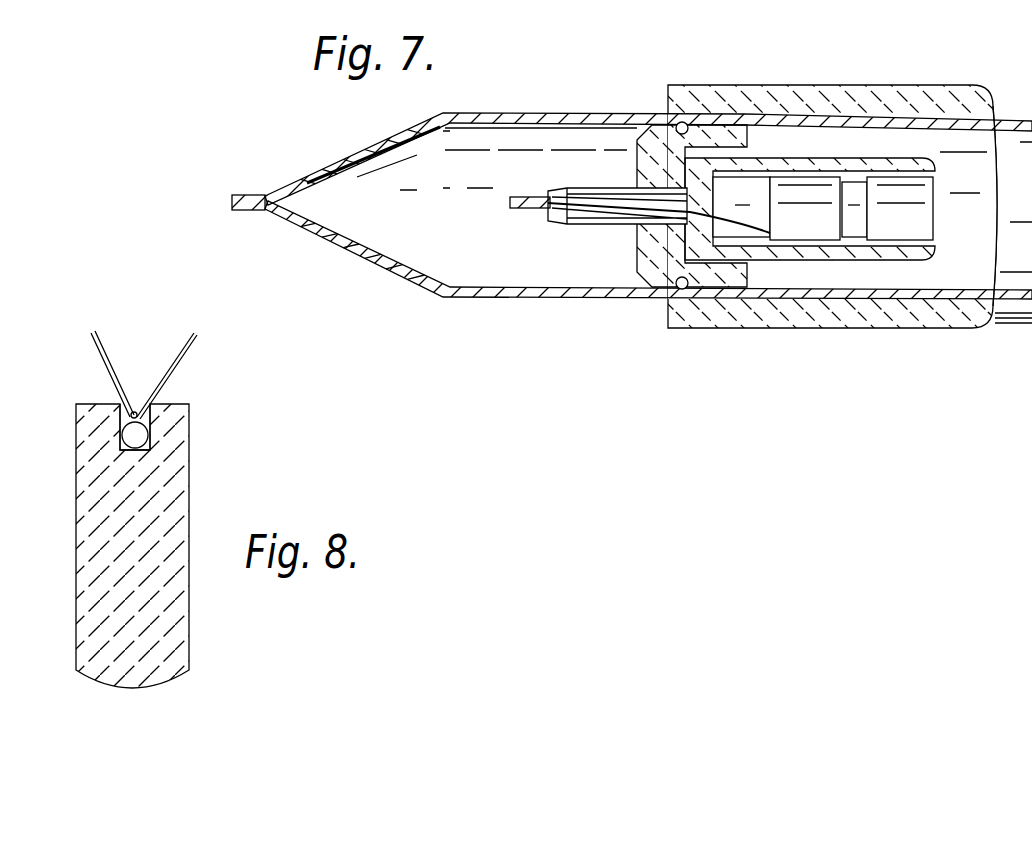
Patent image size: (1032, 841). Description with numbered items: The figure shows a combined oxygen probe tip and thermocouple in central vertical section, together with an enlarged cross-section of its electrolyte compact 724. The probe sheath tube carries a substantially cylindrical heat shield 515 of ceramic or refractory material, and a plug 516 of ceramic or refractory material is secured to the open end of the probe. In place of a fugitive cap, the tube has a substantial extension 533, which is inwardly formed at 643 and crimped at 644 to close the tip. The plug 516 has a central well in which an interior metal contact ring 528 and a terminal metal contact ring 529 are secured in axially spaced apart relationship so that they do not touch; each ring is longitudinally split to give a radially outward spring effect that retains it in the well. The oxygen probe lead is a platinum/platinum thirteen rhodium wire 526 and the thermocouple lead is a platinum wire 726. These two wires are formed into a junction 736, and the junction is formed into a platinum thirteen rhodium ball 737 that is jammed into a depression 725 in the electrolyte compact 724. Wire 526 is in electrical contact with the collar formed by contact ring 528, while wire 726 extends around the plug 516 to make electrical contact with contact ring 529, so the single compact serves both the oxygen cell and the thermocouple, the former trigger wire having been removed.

In FIG. 7, the heat shield 515 is at (757, 318).
In FIG. 7, the plug 516 is at (678, 260).
In FIG. 7, the platinum/platinum 13 rhodium wire 526 is at (588, 222).
In FIG. 8, the platinum/platinum 13 rhodium wire 526 is at (181, 356).
In FIG. 7, the interior metal contact ring 528 is at (807, 242).
In FIG. 7, the terminal metal contact ring 529 is at (898, 244).
In FIG. 7, the extension of the tube 533 is at (556, 297).
In FIG. 7, the inwardly formed portion 643 is at (348, 250).
In FIG. 7, the crimp 644 is at (240, 195).
In FIG. 7, the electrolyte compact 724 is at (523, 210).
In FIG. 8, the electrolyte compact 724 is at (168, 627).
In FIG. 8, the depression 725 is at (127, 408).
In FIG. 7, the platinum wire 726 is at (603, 190).
In FIG. 8, the platinum wire 726 is at (103, 350).
In FIG. 8, the junction 736 is at (145, 423).
In FIG. 8, the Pt-13 Rh ball 737 is at (145, 436).